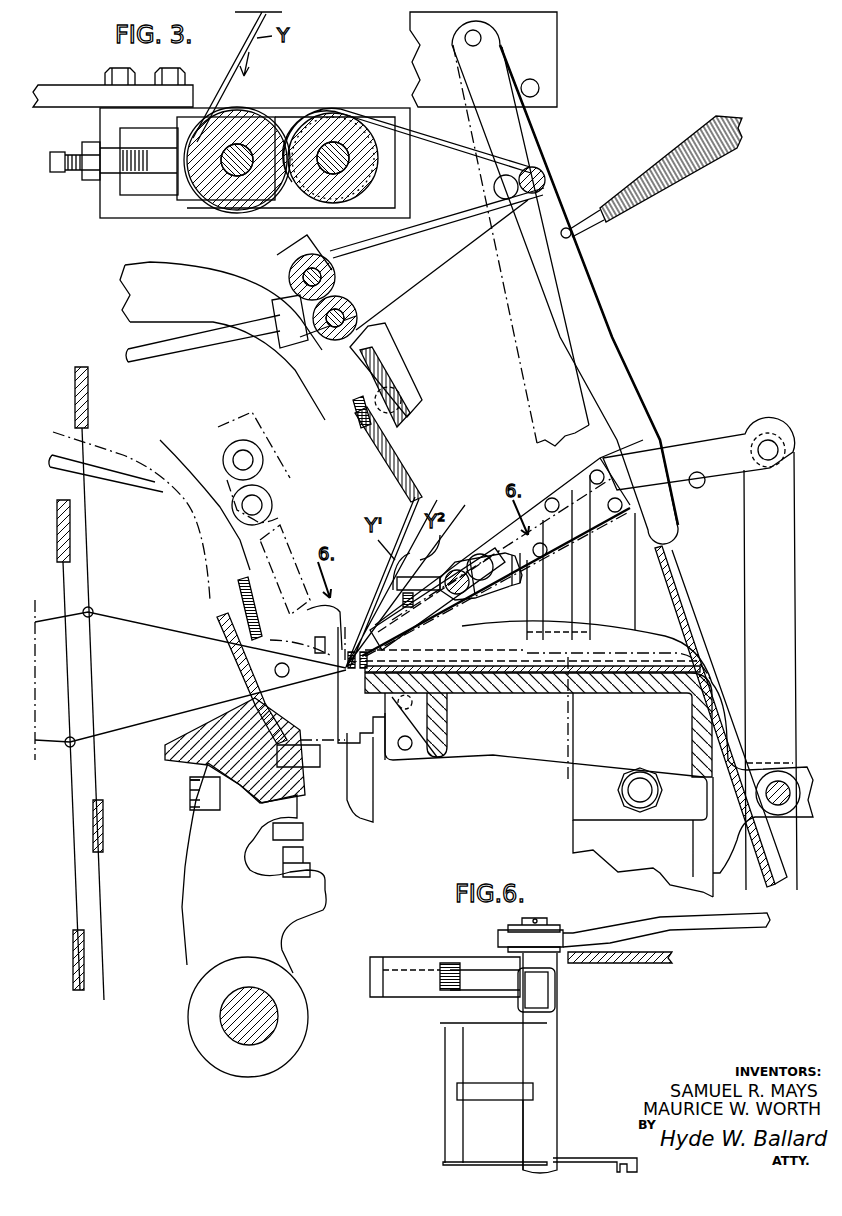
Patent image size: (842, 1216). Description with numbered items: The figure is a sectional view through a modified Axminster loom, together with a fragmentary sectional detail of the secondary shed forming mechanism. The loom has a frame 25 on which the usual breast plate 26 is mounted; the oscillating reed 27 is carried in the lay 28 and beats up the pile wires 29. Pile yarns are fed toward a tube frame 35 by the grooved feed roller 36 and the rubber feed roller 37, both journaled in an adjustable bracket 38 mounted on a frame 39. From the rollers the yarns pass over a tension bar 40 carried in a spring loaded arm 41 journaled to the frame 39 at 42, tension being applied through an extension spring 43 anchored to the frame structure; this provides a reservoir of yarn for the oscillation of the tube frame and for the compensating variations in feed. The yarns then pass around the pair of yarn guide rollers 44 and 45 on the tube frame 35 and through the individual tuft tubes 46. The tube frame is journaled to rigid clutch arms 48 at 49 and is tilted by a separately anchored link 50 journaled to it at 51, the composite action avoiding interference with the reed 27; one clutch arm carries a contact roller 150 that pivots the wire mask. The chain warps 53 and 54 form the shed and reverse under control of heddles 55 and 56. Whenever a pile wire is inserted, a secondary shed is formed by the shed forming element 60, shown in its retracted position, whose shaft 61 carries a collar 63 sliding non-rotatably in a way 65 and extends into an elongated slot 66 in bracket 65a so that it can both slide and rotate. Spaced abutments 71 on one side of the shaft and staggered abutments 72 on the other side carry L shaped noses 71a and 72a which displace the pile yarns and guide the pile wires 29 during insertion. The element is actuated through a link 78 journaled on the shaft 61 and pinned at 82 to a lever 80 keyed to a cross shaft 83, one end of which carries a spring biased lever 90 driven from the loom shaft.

In FIG. 3, the frame 25 is at (575, 833).
In FIG. 3, the breast plate 26 is at (548, 745).
In FIG. 3, the oscillating reed 27 is at (225, 655).
In FIG. 3, the lay 28 is at (196, 935).
In FIG. 3, the pile wires 29 is at (372, 685).
In FIG. 3, the tube frame 35 is at (405, 370).
In FIG. 3, the grooved feed roller 36 is at (323, 118).
In FIG. 3, the rubber feed roller 37 is at (262, 120).
In FIG. 3, the adjustable bracket 38 is at (168, 208).
In FIG. 3, the frame 39 is at (60, 92).
In FIG. 3, the tension bar 40 is at (545, 178).
In FIG. 3, the spring loaded arm 41 is at (505, 290).
In FIG. 3, the journal 42 is at (465, 39).
In FIG. 3, the extension spring 43 is at (680, 150).
In FIG. 3, the yarn guide roller 44 is at (268, 460).
In FIG. 3, the yarn guide roller 45 is at (357, 312).
In FIG. 3, the tuft tubes 46 is at (418, 490).
In FIG. 3, the clutch arms 48 is at (200, 277).
In FIG. 3, the journal 49 is at (402, 402).
In FIG. 3, the link 50 is at (213, 348).
In FIG. 3, the journal 51 is at (300, 338).
In FIG. 3, the chain warp 53 is at (135, 622).
In FIG. 3, the chain warp 54 is at (114, 733).
In FIG. 3, the heddle 55 is at (90, 560).
In FIG. 3, the heddle 56 is at (67, 603).
In FIG. 3, the shed forming element 60 is at (520, 575).
In FIG. 6, the shed forming element 60 is at (548, 1133).
In FIG. 3, the shaft 61 is at (475, 572).
In FIG. 6, the shaft 61 is at (548, 1052).
In FIG. 3, the collar 63 is at (457, 570).
In FIG. 6, the collar 63 is at (555, 994).
In FIG. 3, the way 65 is at (410, 635).
In FIG. 6, the way 65 is at (458, 988).
In FIG. 3, the bracket 65a is at (493, 520).
In FIG. 6, the bracket 65a is at (636, 966).
In FIG. 3, the elongated slot 66 is at (427, 618).
In FIG. 6, the elongated slot 66 is at (452, 962).
In FIG. 6, the abutments 71 is at (440, 1030).
In FIG. 3, the L shaped nose 71a is at (425, 575).
In FIG. 6, the staggered abutments 72 is at (628, 1158).
In FIG. 3, the L shaped nose 72a is at (528, 543).
In FIG. 3, the link 78 is at (697, 455).
In FIG. 6, the link 78 is at (582, 932).
In FIG. 3, the lever 80 is at (750, 616).
In FIG. 3, the pin 82 is at (768, 442).
In FIG. 3, the cross shaft 83 is at (783, 808).
In FIG. 3, the lever 90 is at (778, 778).
In FIG. 3, the contact roller 150 is at (410, 382).